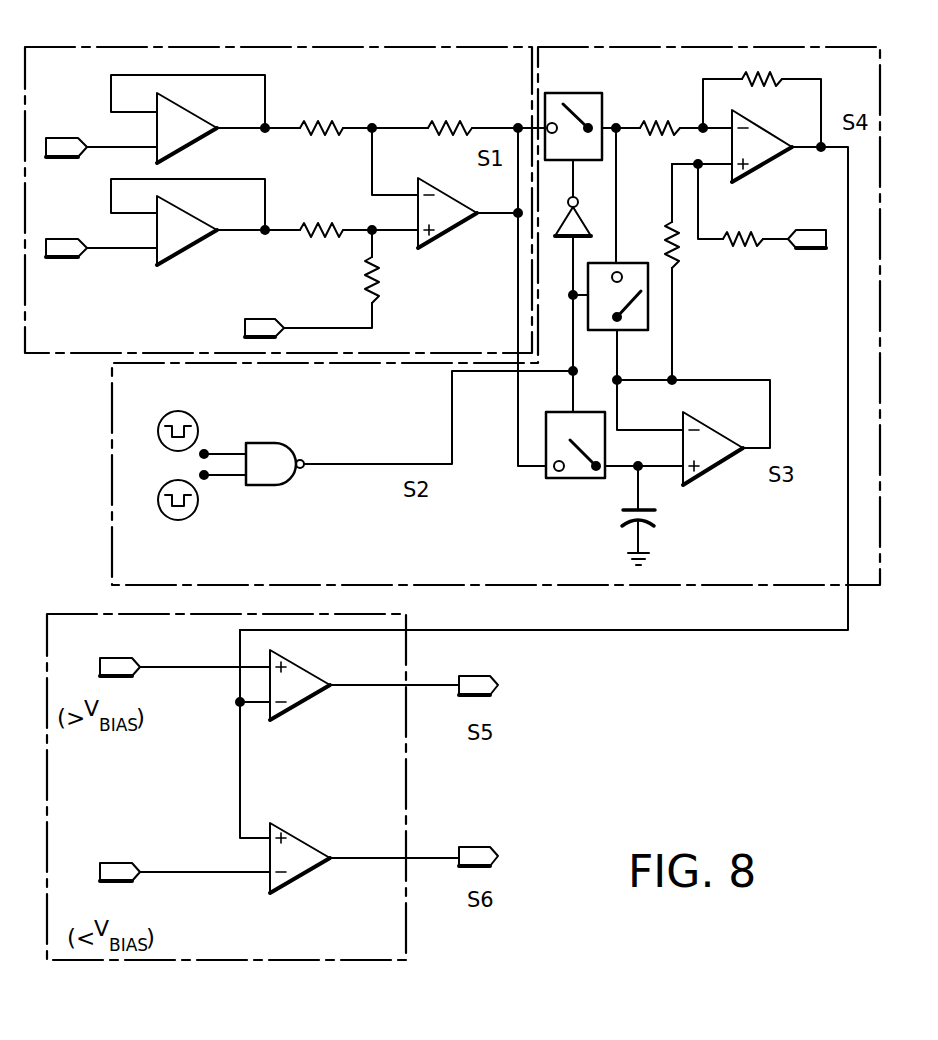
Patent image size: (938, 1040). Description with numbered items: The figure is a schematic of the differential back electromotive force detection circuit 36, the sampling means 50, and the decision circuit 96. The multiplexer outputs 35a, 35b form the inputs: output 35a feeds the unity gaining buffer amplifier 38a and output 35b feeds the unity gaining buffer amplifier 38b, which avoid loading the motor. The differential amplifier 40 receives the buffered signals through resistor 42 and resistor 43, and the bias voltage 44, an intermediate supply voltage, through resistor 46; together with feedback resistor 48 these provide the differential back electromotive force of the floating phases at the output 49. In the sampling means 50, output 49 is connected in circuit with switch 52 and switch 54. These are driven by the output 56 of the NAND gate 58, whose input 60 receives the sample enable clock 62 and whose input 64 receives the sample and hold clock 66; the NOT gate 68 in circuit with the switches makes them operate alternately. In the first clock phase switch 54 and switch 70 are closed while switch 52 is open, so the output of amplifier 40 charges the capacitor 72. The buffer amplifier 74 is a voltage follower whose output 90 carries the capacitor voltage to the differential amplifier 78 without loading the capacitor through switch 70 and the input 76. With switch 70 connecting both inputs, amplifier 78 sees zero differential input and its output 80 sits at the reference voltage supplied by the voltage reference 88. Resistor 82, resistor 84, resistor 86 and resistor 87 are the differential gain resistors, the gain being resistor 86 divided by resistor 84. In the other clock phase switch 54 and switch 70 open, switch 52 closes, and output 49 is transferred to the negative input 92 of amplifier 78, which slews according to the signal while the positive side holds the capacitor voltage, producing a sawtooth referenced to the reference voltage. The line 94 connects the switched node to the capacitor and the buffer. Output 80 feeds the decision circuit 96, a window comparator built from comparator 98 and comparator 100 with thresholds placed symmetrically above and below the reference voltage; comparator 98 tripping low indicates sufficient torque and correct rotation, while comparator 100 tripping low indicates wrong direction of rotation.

The differential back electromotive force detection circuit 36 is at (394, 47).
The output of multiplexer 35a is at (56, 138).
The output of multiplexer 35b is at (72, 218).
The unity gaining buffer amplifier 38a is at (182, 155).
The unity gaining buffer amplifier 38b is at (182, 257).
The resistor 42 is at (305, 124).
The resistor 43 is at (305, 226).
The resistor 46 is at (366, 284).
The bias voltage 44 is at (262, 319).
The resistor 48 is at (474, 122).
The differential amplifier 40 is at (453, 230).
The output of amplifier 49 is at (500, 216).
The means for sampling 50 is at (610, 47).
The switch 52 is at (598, 93).
The resistor 84 is at (678, 127).
The negative input of differential amplifier 92 is at (716, 125).
The resistor 86 is at (772, 79).
The differential amplifier 78 is at (765, 128).
The output of amplifier 80 is at (832, 150).
The input of amplifier 76 is at (718, 166).
The resistor 87 is at (680, 258).
The resistor 82 is at (750, 248).
The voltage reference 88 is at (812, 250).
The NOT gate 68 is at (580, 216).
The switch 70 is at (633, 263).
The output of buffer amplifier 90 is at (770, 432).
The buffer amplifier 74 is at (725, 438).
The switch 54 is at (578, 479).
The capacitor 72 is at (630, 518).
The capacitor node line 94 is at (668, 470).
The sample and hold clock 66 is at (176, 411).
The input of NAND gate 64 is at (235, 452).
The sample enable clock 62 is at (175, 520).
The input of NAND gate 60 is at (221, 478).
The NAND gate 58 is at (258, 486).
The output of NAND gate 56 is at (343, 463).
The decision circuit 96 is at (406, 831).
The comparator 98 is at (288, 713).
The comparator 100 is at (292, 881).